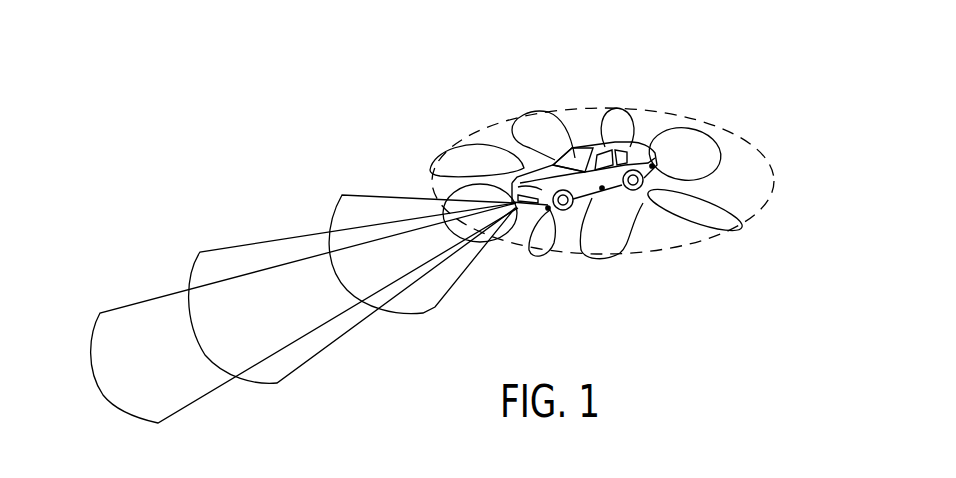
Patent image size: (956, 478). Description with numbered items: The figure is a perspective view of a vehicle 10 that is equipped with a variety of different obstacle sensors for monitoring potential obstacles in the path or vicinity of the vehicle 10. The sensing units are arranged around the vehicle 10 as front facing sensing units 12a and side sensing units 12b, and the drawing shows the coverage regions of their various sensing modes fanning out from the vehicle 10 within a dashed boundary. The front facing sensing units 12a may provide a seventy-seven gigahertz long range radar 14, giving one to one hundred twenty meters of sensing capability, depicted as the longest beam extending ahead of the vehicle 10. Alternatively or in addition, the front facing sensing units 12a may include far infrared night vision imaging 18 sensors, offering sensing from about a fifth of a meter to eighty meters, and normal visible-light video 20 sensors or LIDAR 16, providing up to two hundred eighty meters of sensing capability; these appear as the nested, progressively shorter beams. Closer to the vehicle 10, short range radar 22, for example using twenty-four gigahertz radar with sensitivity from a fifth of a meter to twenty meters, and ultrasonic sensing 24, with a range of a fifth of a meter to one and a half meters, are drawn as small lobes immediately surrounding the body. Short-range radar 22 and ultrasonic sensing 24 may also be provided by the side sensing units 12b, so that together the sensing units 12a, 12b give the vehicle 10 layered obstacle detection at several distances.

The vehicle 10 is at (612, 74).
The front facing sensing units 12a is at (500, 205).
The side sensing units 12b is at (652, 170).
The long range radar 14 is at (304, 313).
The LIDAR 16 is at (144, 322).
The far infrared imaging 18 is at (256, 243).
The visible-light video 20 is at (348, 213).
The short range radar 22 is at (728, 217).
The ultrasonic sensing 24 is at (440, 195).